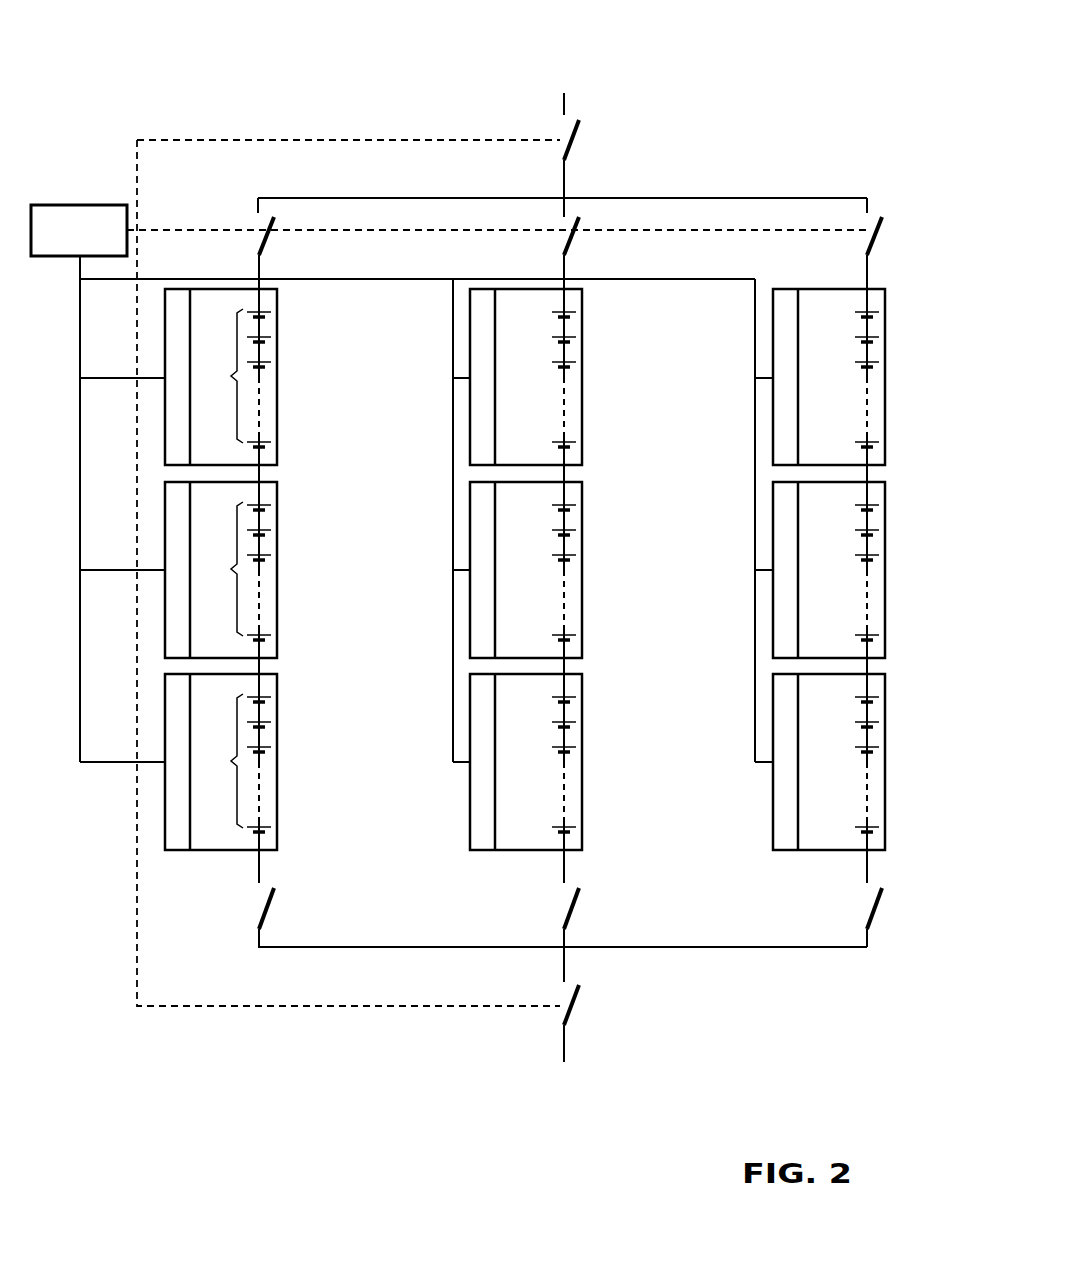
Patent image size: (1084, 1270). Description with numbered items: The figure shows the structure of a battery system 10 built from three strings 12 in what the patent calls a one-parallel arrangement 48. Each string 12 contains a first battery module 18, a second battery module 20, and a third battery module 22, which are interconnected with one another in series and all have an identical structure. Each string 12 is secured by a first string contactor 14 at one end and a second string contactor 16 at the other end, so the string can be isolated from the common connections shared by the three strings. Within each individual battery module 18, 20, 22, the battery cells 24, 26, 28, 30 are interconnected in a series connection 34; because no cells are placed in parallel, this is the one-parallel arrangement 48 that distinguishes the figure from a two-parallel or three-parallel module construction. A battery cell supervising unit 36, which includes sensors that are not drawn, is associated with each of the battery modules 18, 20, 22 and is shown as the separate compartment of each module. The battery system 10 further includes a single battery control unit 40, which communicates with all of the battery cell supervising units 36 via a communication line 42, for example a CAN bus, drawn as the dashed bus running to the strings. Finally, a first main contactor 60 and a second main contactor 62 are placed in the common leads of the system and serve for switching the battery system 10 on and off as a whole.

The battery system 10 is at (824, 75).
The string 12 is at (525, 642).
The first string contactor 14 is at (599, 913).
The second string contactor 16 is at (599, 245).
The first battery module 18 is at (609, 404).
The second battery module 20 is at (609, 597).
The third battery module 22 is at (609, 789).
The battery cell 24 is at (603, 492).
The battery cell 26 is at (613, 526).
The battery cell 28 is at (603, 558).
The battery cell 30 is at (603, 641).
The series connection 34 is at (219, 568).
The battery cell supervising unit 36 is at (445, 569).
The battery control unit 40 is at (79, 194).
The communication line 42 is at (404, 509).
The 1p arrangement 48 is at (473, 618).
The first main contactor 60 is at (600, 1014).
The second main contactor 62 is at (600, 140).